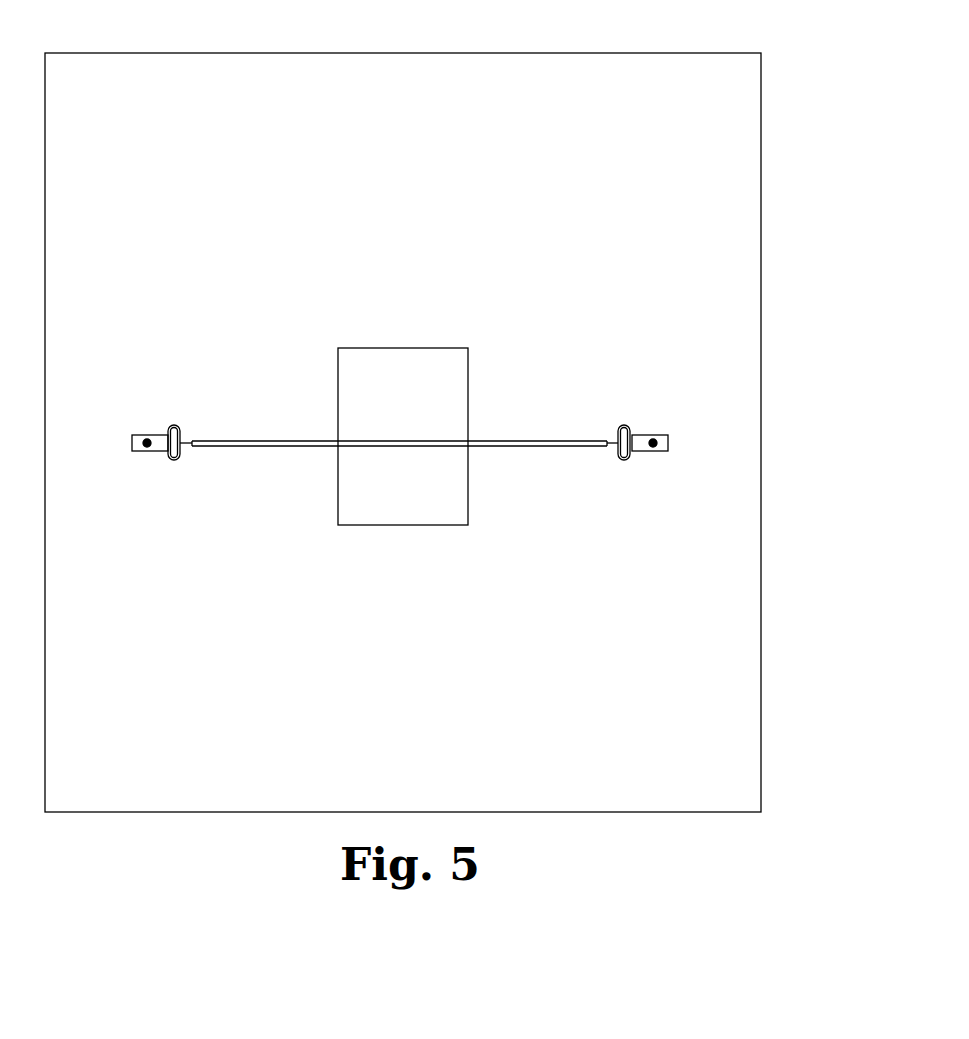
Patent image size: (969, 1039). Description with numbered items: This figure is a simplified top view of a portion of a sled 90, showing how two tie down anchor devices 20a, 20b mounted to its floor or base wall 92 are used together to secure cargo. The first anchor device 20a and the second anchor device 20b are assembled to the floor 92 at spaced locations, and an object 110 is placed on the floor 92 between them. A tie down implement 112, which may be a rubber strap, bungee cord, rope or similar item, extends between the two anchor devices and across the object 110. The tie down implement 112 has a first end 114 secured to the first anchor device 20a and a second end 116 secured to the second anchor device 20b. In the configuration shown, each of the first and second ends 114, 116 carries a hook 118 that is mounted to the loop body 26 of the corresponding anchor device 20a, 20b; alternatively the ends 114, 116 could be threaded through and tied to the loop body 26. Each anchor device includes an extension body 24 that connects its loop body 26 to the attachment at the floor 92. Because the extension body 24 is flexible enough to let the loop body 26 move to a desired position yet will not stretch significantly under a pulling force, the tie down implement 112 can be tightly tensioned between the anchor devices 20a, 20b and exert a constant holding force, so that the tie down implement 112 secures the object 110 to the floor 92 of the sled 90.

The sled 90 is at (434, 411).
The floor or base wall 92 is at (602, 85).
The object 110 is at (396, 378).
The tie down implement 112 is at (518, 458).
The first anchor device 20a is at (141, 398).
The second anchor device 20b is at (645, 406).
The extension body 24 is at (150, 453).
The loop body 26 is at (178, 454).
The hook 118 is at (180, 438).
The first end 114 is at (186, 448).
The second end 116 is at (612, 448).